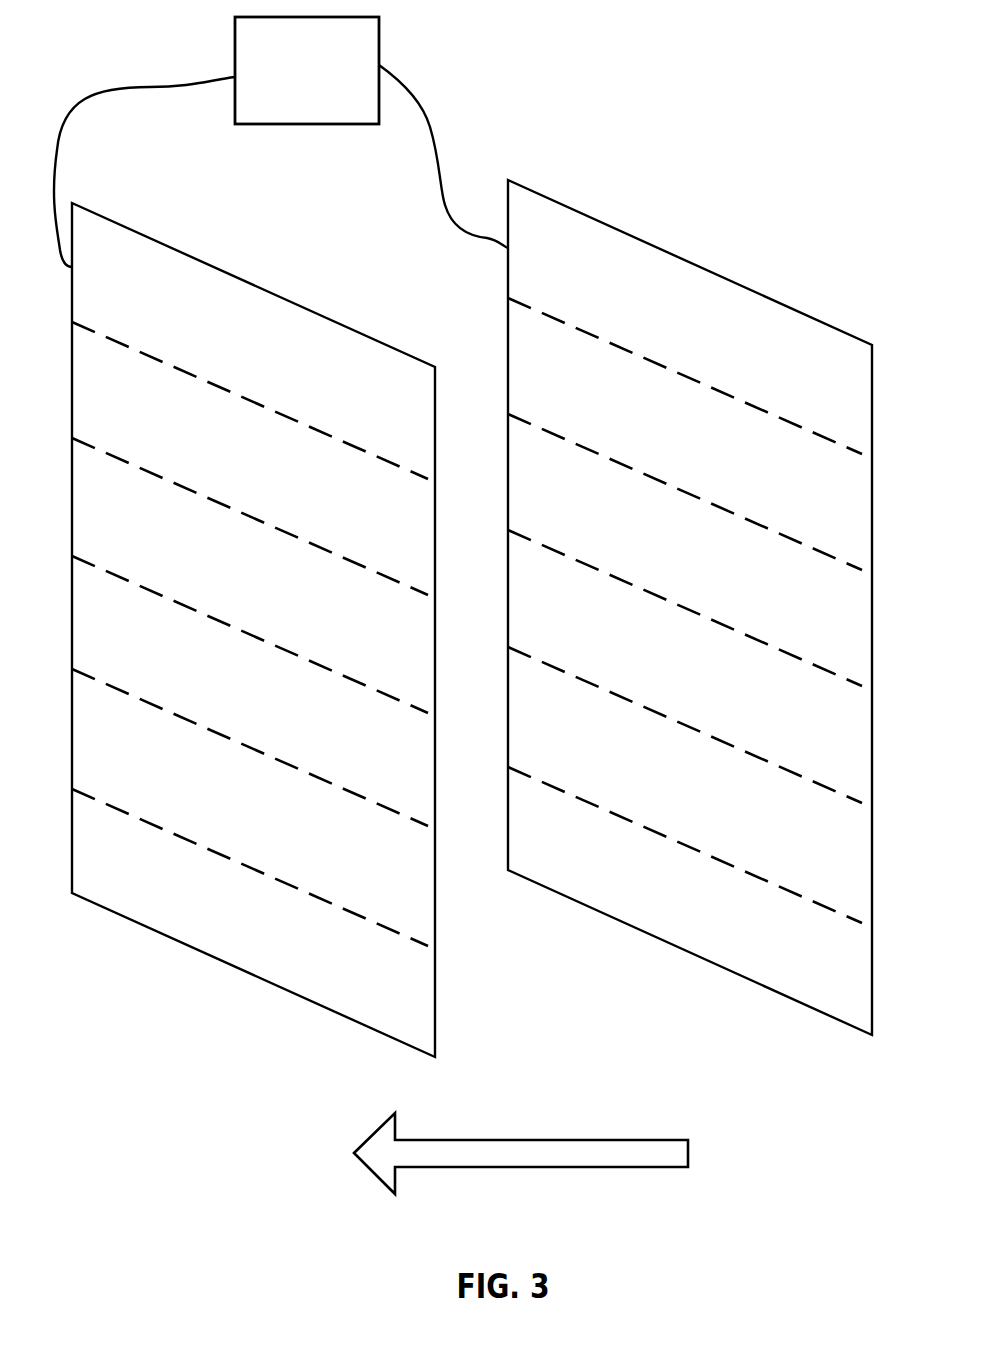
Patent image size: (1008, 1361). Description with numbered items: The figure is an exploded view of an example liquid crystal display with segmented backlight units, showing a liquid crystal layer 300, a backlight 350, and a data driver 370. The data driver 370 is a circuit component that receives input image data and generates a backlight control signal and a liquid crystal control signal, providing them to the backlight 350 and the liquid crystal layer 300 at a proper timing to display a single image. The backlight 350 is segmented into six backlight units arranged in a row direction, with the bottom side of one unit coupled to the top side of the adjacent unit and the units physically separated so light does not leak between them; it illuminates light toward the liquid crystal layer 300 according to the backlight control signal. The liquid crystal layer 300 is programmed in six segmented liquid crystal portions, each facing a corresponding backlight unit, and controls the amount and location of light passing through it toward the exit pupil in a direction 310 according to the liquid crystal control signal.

The liquid crystal layer 300 is at (267, 291).
The direction 310 is at (521, 1161).
The backlight 350 is at (686, 260).
The data driver 370 is at (287, 98).